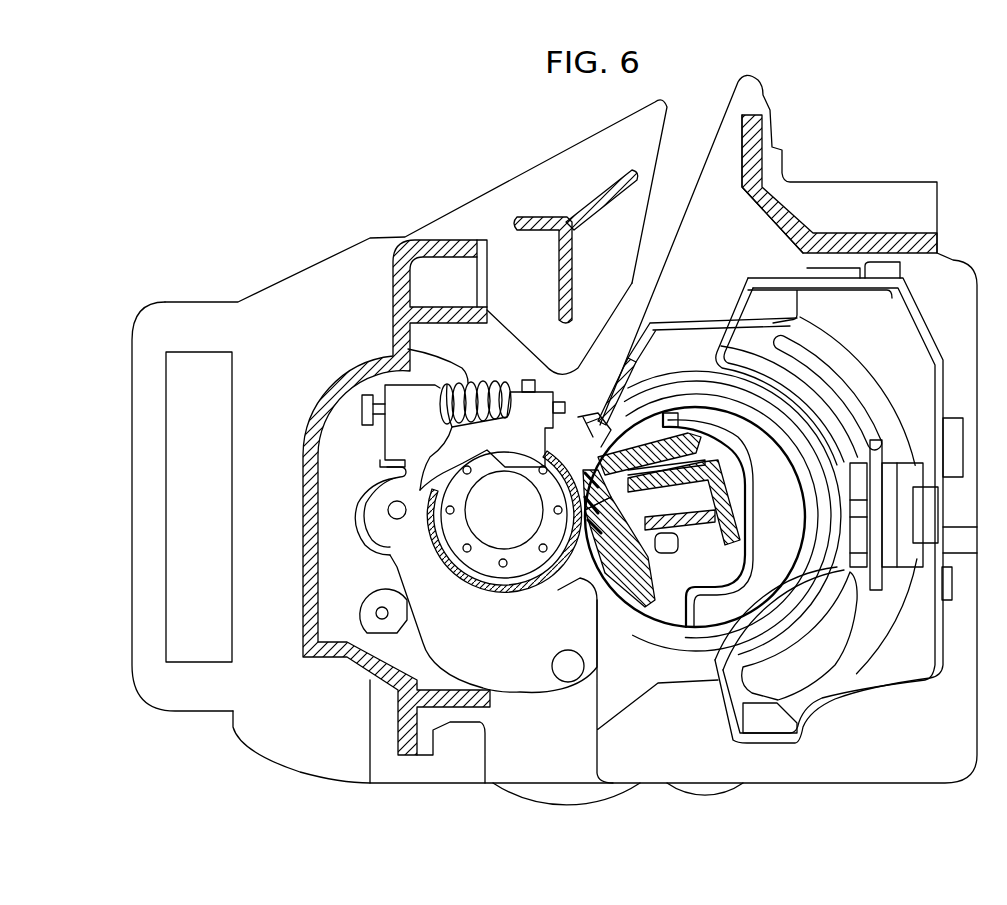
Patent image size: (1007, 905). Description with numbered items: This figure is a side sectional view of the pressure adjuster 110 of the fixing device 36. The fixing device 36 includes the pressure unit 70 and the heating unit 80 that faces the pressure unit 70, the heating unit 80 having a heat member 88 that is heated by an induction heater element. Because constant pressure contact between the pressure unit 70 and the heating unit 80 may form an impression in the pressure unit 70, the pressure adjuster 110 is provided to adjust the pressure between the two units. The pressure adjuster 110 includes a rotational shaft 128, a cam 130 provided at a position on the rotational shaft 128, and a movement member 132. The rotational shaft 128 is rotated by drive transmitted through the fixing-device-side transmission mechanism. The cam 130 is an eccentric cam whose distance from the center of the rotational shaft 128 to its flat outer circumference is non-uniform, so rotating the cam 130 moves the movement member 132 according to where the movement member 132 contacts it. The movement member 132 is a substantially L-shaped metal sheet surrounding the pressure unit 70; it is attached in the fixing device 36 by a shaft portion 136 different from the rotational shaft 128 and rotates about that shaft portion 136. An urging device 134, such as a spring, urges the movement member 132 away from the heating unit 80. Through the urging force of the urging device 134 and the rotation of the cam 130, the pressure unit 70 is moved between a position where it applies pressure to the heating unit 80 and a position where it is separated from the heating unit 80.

The fixing device 36 is at (875, 160).
The pressure unit 70 is at (420, 503).
The heating unit 80 is at (679, 360).
The heat member 88 is at (635, 610).
The pressure adjuster 110 is at (350, 547).
The rotational shaft 128 is at (380, 627).
The cam 130 is at (353, 607).
The movement member 132 is at (460, 660).
The urging device 134 is at (395, 355).
The shaft portion 136 is at (568, 668).